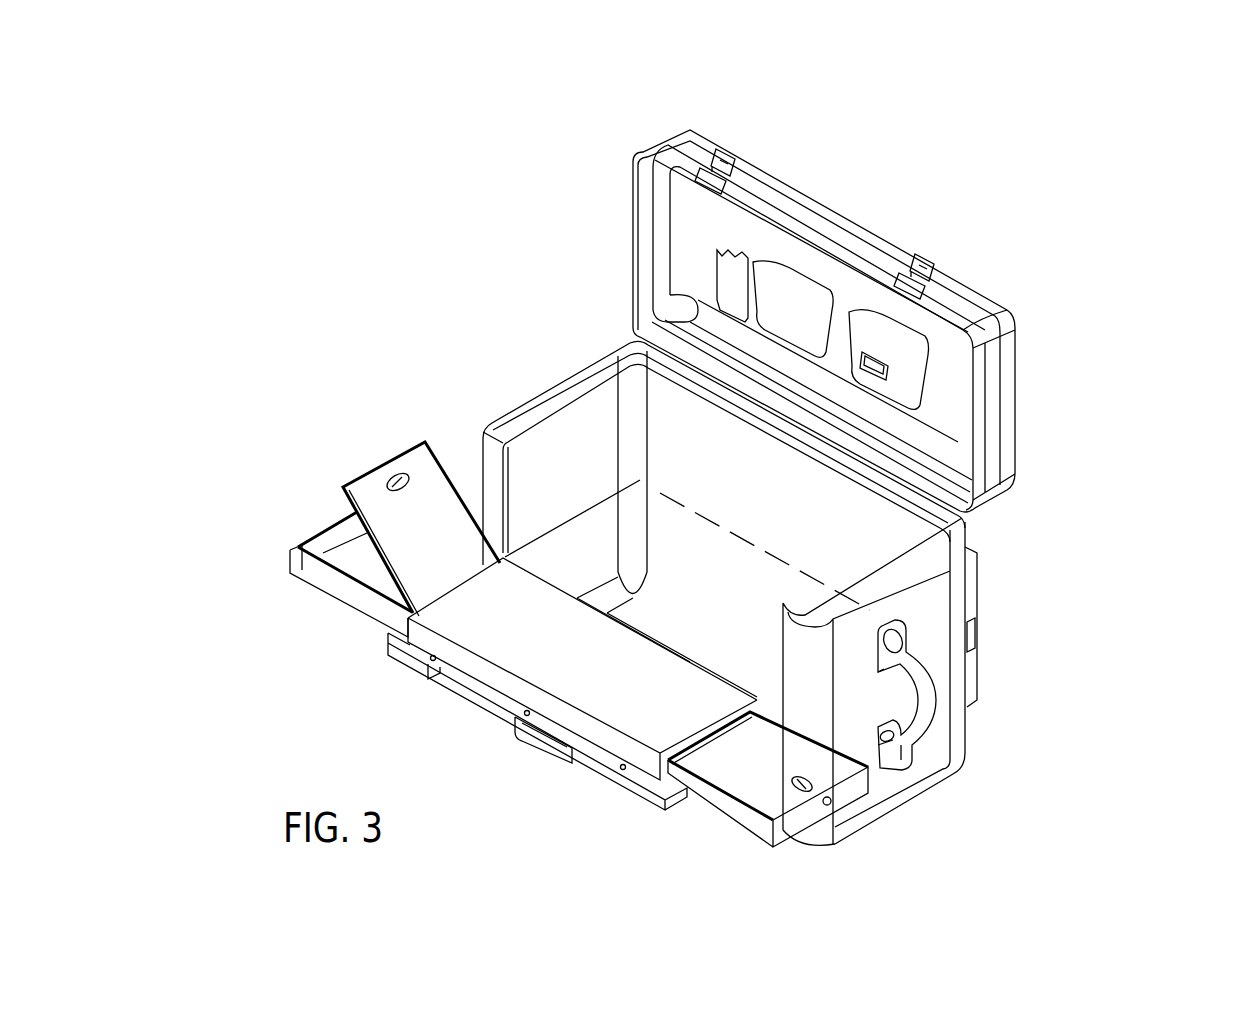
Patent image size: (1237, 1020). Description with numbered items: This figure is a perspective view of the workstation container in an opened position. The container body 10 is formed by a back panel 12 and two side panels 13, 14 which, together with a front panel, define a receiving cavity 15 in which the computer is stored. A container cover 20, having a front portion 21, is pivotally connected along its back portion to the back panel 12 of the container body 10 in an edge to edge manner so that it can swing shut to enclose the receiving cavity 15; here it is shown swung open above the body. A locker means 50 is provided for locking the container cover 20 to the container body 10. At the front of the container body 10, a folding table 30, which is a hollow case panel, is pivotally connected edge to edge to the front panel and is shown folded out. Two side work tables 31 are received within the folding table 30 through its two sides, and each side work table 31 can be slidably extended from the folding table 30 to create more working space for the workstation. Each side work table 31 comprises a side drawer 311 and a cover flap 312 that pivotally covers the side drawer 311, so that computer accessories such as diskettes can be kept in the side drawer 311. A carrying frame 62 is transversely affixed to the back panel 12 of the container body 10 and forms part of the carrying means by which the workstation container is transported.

The container body 10 is at (1105, 719).
The back panel 12 is at (880, 553).
The side panel 13 is at (523, 438).
The side panel 14 is at (927, 757).
The receiving cavity 15 is at (583, 427).
The container cover 20 is at (1032, 200).
The front portion 21 is at (965, 307).
The folding table 30 is at (540, 628).
The side work table 31 is at (567, 589).
The side drawer 311 is at (338, 535).
The cover flap 312 is at (392, 477).
The locker means 50 is at (717, 158).
The carrying frame 62 is at (973, 588).